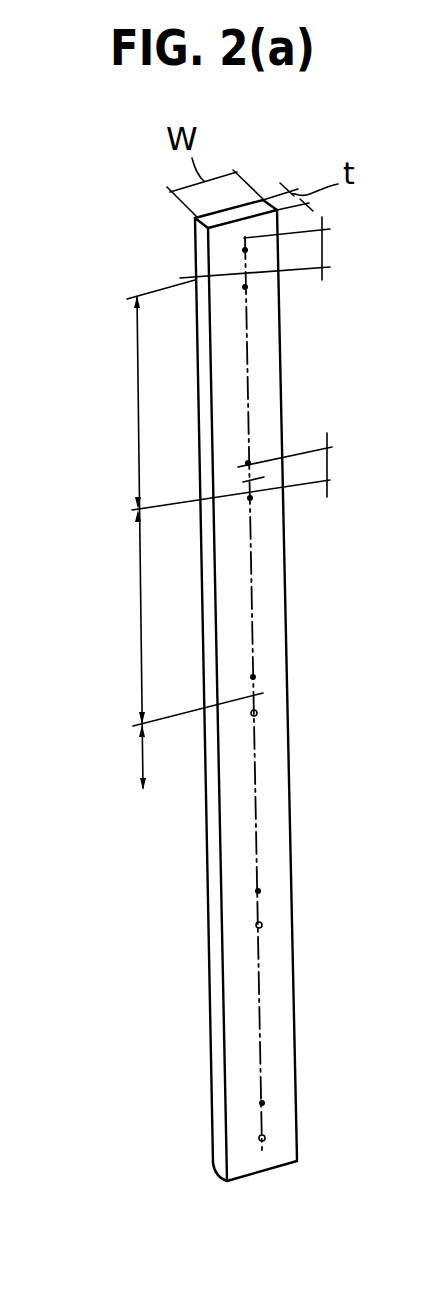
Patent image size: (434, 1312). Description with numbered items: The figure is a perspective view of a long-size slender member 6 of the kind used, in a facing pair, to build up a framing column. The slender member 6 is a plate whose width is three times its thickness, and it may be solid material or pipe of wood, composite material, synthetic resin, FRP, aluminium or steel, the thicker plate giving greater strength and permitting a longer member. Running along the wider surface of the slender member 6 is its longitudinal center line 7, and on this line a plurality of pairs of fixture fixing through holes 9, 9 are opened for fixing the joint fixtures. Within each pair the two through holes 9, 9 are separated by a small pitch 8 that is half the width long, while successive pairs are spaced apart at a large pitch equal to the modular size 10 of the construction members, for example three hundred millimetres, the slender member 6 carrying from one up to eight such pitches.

The slender member 6 is at (190, 263).
The longitudinal center line 7 is at (258, 832).
The small pitch 8 is at (325, 248).
The fixture fixing through hole 9 is at (245, 250).
The modular size 10 is at (137, 411).